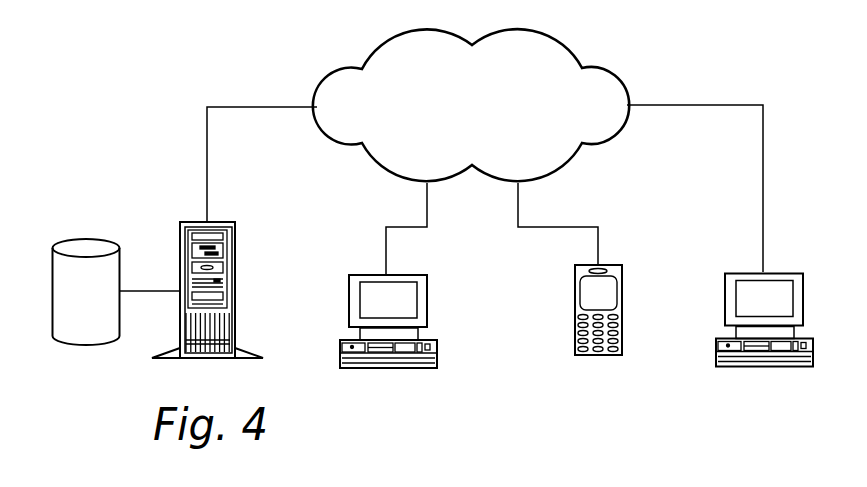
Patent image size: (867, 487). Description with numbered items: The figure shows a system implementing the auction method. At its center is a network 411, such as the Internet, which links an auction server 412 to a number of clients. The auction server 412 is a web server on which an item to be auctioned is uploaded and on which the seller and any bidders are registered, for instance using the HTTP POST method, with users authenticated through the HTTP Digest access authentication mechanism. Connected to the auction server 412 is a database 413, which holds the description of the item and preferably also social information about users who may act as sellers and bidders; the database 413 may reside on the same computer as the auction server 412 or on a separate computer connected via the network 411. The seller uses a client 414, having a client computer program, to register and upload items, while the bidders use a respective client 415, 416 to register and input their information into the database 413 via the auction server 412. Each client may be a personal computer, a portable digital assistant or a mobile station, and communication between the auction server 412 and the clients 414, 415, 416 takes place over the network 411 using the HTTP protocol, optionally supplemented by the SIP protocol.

The network 411 is at (490, 116).
The auction server 412 is at (177, 263).
The database 413 is at (78, 248).
The client 414 is at (372, 272).
The client 415 is at (622, 312).
The client 416 is at (787, 272).